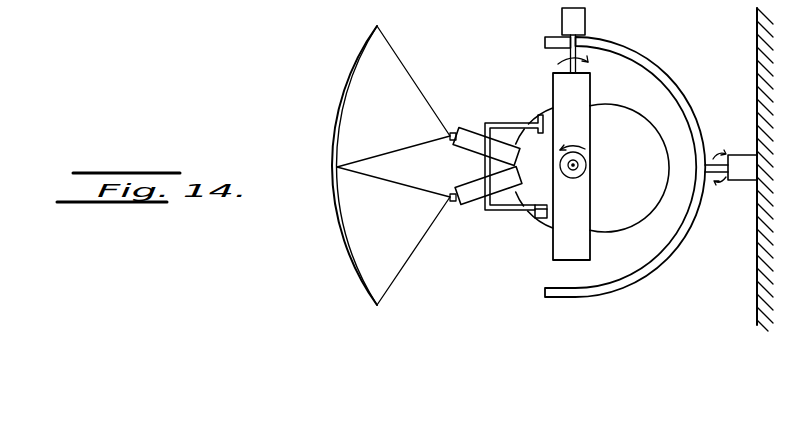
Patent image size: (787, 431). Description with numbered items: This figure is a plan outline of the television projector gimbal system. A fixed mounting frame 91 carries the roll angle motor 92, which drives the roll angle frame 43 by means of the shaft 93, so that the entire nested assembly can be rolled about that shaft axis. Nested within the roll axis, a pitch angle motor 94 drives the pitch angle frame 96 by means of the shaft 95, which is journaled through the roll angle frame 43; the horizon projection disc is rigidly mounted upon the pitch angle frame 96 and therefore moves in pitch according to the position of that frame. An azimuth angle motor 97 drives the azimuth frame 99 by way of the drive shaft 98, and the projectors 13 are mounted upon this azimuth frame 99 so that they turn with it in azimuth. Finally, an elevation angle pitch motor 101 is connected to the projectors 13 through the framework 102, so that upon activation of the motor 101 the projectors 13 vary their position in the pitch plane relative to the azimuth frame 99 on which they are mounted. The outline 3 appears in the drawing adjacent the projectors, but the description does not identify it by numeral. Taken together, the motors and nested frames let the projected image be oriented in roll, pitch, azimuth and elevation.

The parabolic reflector dish 3 is at (345, 88).
The projectors 13 is at (470, 183).
The roll angle frame 43 is at (678, 81).
The mounting frame 91 is at (757, 75).
The roll angle motor 92 is at (741, 155).
The shaft 93 is at (723, 181).
The pitch angle motor 94 is at (584, 19).
The shaft 95 is at (555, 67).
The pitch angle frame 96 is at (592, 86).
The azimuth angle motor 97 is at (578, 178).
The drive shaft 98 is at (587, 164).
The azimuth frame 99 is at (628, 130).
The elevation angle pitch motor 101 is at (539, 219).
The framework 102 is at (515, 210).